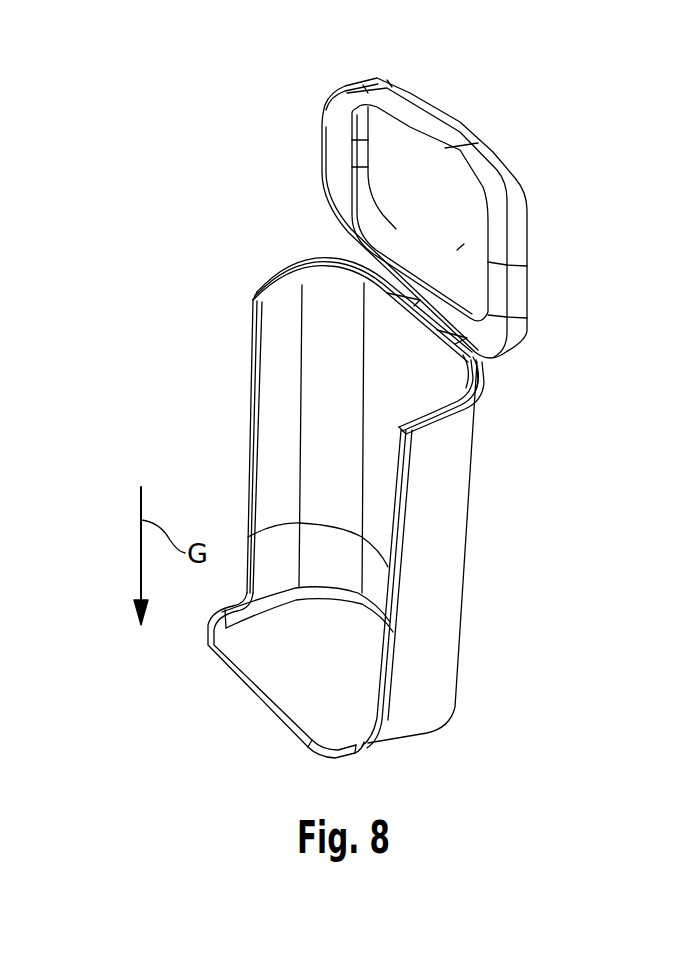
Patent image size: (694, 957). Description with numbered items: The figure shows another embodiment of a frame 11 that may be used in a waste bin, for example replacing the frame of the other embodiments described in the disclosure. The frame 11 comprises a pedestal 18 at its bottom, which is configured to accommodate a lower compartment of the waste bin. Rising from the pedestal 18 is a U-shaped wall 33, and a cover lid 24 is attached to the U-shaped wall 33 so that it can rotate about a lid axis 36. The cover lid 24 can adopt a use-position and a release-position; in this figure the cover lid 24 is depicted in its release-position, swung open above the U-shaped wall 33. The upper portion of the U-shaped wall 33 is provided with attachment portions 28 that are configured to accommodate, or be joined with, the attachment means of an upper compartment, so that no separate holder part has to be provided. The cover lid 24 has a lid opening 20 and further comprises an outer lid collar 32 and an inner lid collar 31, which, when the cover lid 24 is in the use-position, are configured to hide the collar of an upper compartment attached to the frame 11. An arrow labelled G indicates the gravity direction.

The frame 11 is at (405, 504).
The pedestal 18 is at (360, 745).
The lid opening 20 is at (431, 208).
The cover lid 24 is at (430, 130).
The attachment portions 28 is at (272, 290).
The inner lid collar 31 is at (363, 185).
The outer lid collar 32 is at (332, 128).
The U-shaped wall 33 is at (435, 572).
The lid axis 36 is at (483, 378).